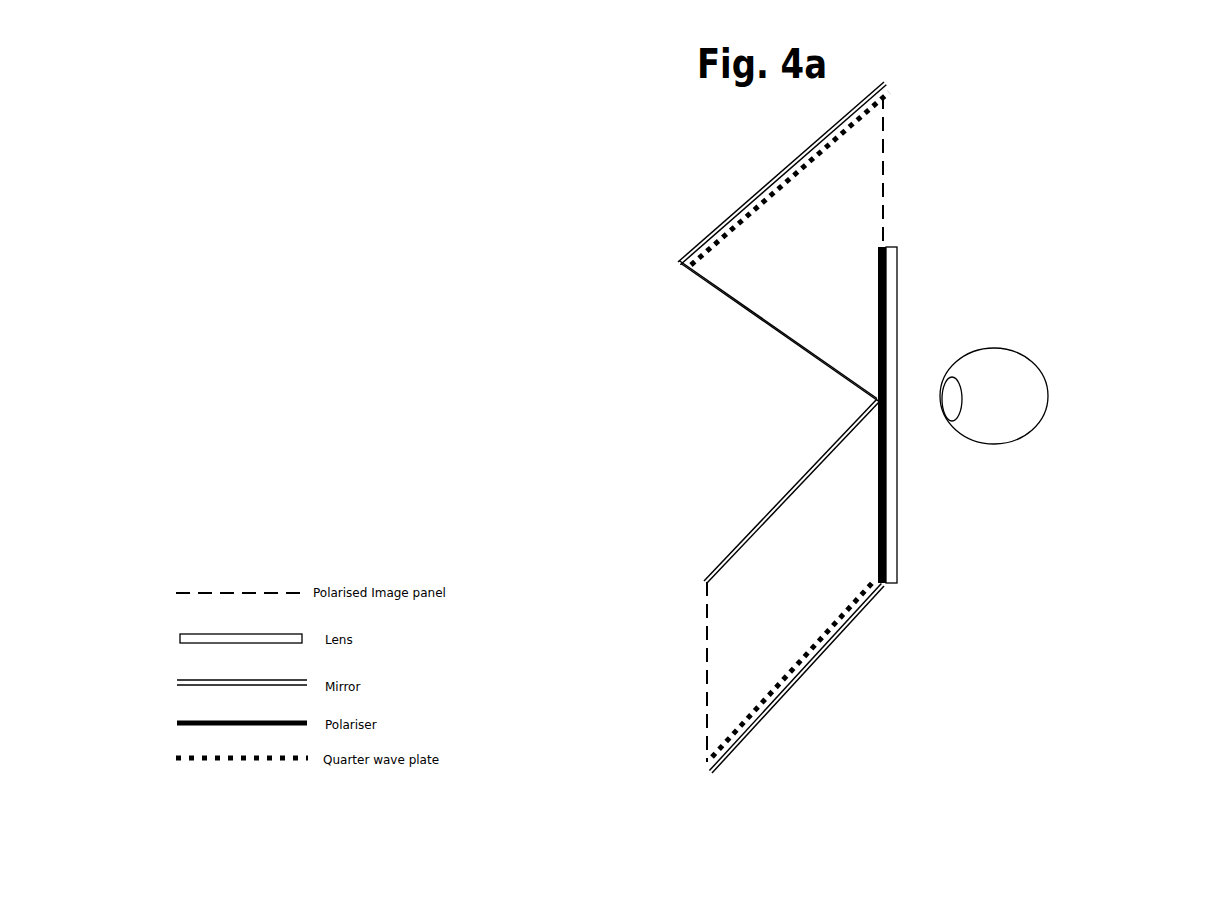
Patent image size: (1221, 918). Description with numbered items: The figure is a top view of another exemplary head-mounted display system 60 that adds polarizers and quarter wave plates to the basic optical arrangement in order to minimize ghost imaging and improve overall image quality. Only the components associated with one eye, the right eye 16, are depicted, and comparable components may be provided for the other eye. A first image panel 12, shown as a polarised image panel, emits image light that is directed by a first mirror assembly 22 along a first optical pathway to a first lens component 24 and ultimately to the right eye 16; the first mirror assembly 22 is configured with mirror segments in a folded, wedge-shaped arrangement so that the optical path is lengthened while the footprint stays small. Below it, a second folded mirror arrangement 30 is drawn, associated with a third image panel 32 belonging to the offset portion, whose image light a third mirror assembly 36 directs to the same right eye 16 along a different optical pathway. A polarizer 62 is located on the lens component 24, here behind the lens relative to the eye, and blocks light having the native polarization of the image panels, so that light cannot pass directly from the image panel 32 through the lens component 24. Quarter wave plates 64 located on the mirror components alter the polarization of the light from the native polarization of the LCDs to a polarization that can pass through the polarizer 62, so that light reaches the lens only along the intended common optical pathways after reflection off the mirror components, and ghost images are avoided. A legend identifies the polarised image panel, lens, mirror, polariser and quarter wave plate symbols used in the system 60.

The first image panel 12 is at (883, 140).
The right eye 16 is at (1046, 383).
The first mirror assembly 22 is at (648, 265).
The first lens component 24 is at (890, 276).
The second optical arrangement 30 is at (762, 478).
The third image panel 32 is at (707, 660).
The third mirror assembly 36 is at (770, 517).
The head-mounted display system 60 is at (560, 206).
The polarizer 62 is at (878, 360).
The quarter wave plates 64 is at (798, 676).